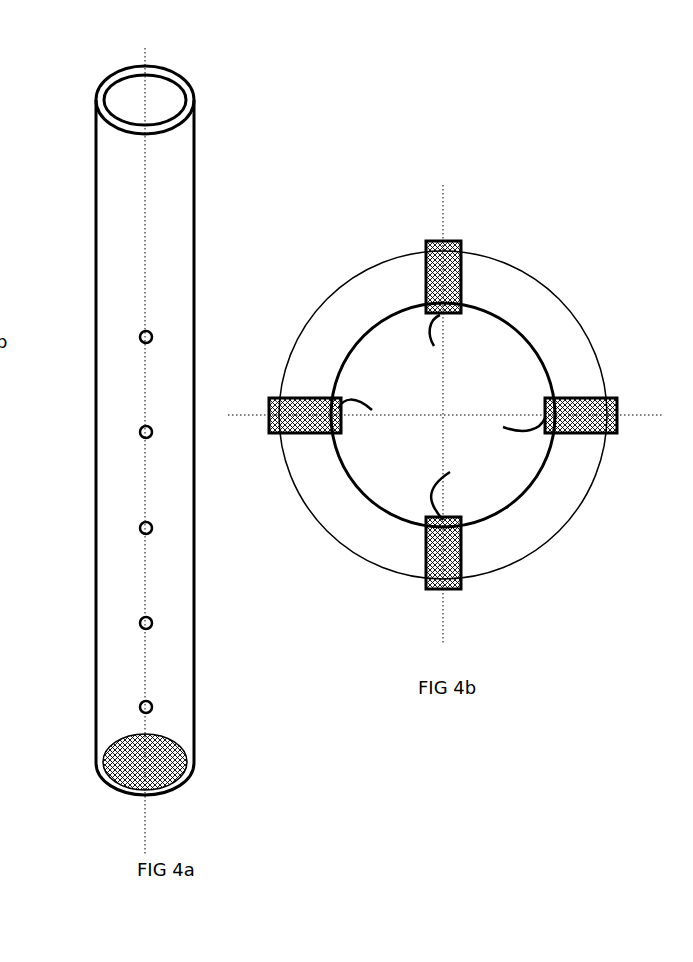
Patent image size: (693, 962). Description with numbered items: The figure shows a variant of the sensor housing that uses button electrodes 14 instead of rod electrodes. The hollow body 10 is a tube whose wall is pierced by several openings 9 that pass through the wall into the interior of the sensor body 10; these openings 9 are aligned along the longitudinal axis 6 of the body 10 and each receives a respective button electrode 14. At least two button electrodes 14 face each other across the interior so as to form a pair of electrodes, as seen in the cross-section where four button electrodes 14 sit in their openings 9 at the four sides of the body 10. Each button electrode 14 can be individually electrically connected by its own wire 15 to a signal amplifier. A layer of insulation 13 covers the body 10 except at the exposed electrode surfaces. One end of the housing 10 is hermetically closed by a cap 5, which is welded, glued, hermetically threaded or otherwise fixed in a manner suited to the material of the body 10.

In FIG. 4A, the cap 5 is at (100, 765).
In FIG. 4A, the longitudinal axis 6 is at (147, 811).
In FIG. 4B, the opening 9 is at (425, 242).
In FIG. 4A, the body 10 is at (195, 168).
In FIG. 4B, the body 10 is at (545, 547).
In FIG. 4B, the layer of insulation 13 is at (525, 263).
In FIG. 4A, the button electrode 14 is at (140, 335).
In FIG. 4B, the button electrode 14 is at (448, 243).
In FIG. 4B, the wire 15 is at (430, 330).